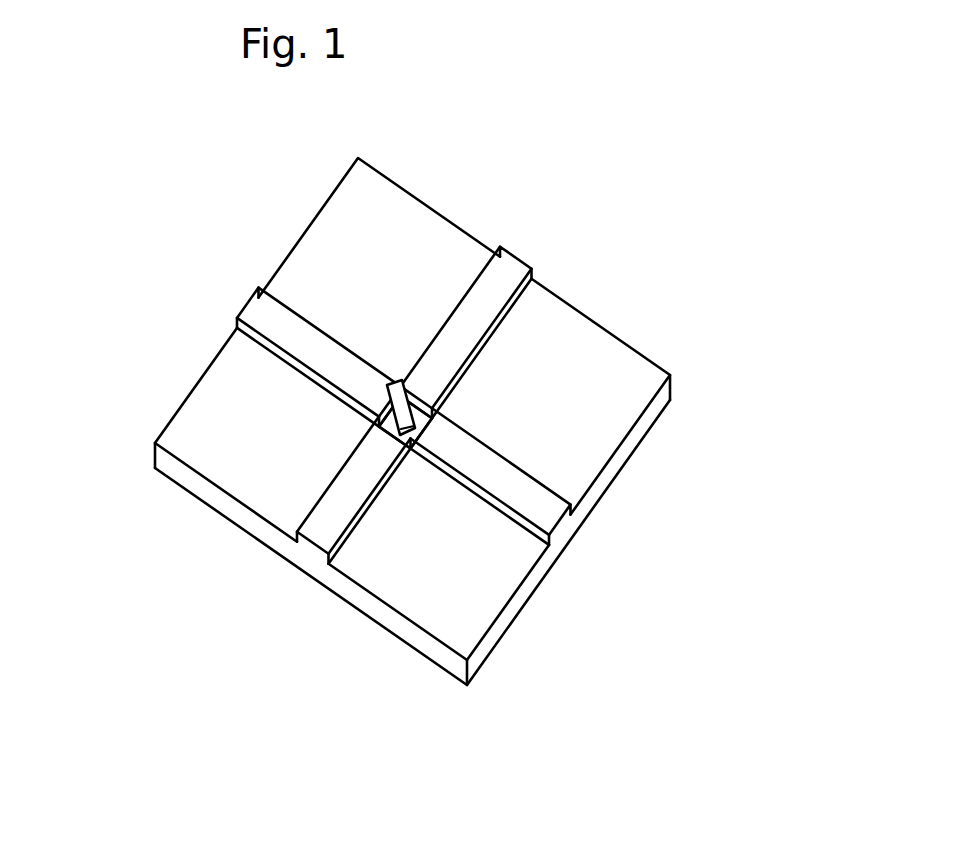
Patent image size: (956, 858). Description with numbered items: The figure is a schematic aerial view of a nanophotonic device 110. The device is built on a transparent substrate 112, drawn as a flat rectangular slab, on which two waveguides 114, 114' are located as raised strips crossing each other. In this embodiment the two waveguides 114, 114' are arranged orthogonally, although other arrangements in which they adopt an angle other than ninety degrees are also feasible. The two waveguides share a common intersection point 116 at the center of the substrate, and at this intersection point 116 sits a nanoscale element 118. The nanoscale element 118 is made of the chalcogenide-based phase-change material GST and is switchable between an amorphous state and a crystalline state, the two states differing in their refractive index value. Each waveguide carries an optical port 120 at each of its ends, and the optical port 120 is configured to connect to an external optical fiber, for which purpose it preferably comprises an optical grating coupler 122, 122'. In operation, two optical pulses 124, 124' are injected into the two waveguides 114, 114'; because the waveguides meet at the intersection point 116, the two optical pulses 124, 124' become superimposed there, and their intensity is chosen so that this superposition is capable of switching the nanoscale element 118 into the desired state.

The nanophotonic device 110 is at (500, 128).
The transparent substrate 112 is at (498, 628).
The waveguide 114 is at (537, 333).
The waveguide 114' is at (576, 476).
The intersection point 116 is at (390, 427).
The nanoscale element 118 is at (405, 407).
The optical port 120 is at (442, 418).
The optical grating coupler 122 is at (442, 418).
The optical grating coupler 122' is at (314, 541).
The optical pulse 124 is at (554, 294).
The optical pulse 124' is at (616, 501).